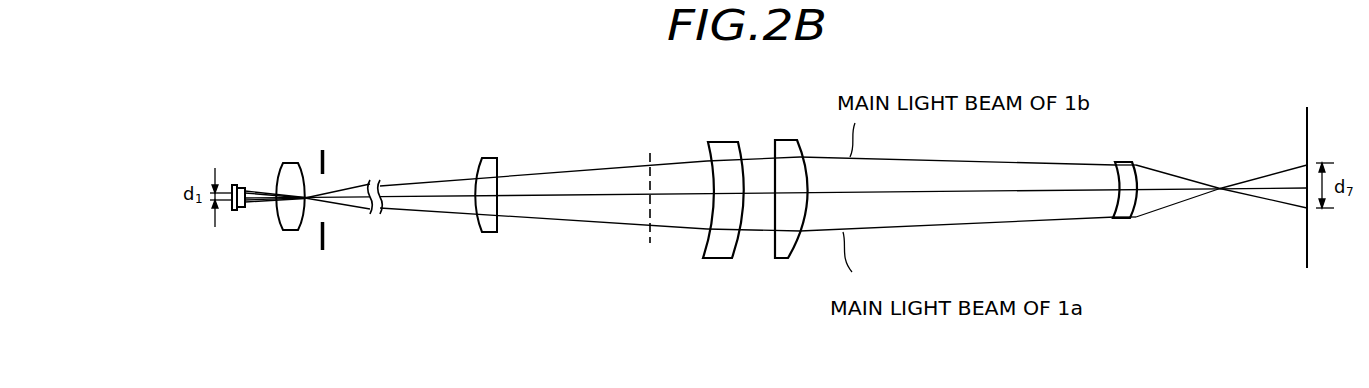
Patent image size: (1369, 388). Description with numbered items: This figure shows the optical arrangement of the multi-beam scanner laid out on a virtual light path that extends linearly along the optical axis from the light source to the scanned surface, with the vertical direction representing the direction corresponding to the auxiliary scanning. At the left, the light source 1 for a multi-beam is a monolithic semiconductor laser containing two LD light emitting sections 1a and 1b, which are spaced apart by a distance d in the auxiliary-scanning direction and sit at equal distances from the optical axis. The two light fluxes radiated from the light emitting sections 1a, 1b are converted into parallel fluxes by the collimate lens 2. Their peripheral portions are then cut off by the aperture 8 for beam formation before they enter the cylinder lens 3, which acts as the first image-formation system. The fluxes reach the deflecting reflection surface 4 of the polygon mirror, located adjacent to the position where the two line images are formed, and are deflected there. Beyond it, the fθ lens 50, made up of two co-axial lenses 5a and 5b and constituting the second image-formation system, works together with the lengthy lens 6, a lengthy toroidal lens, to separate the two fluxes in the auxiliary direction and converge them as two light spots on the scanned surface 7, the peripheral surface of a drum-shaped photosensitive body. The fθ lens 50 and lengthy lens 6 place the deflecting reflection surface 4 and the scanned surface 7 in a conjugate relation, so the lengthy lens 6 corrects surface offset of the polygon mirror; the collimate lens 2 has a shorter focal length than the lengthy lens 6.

The light source for a multi-beam 1 is at (235, 186).
The LD light emitting section 1a is at (248, 188).
The LD light emitting section 1b is at (249, 210).
The collimate lens 2 is at (288, 163).
The cylinder lens 3 is at (497, 158).
The deflecting reflection surface 4 is at (648, 158).
The co-axial lens 5a is at (724, 252).
The co-axial lens 5b is at (784, 252).
The fθ lens 50 is at (755, 195).
The lengthy lens 6 is at (1130, 162).
The scanned surface 7 is at (1307, 120).
The aperture for beam formation 8 is at (325, 156).